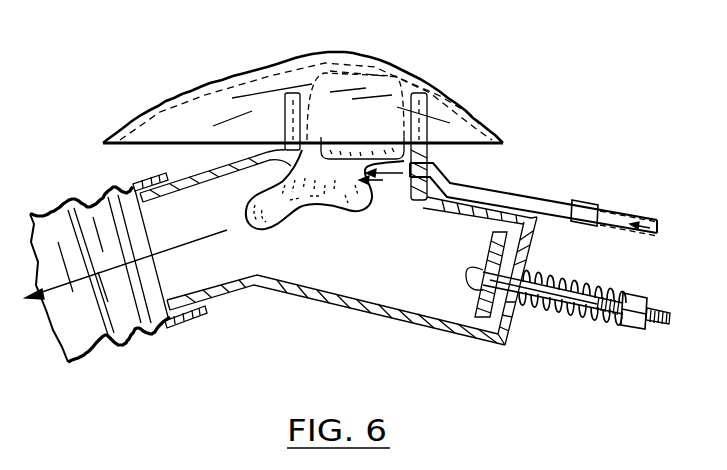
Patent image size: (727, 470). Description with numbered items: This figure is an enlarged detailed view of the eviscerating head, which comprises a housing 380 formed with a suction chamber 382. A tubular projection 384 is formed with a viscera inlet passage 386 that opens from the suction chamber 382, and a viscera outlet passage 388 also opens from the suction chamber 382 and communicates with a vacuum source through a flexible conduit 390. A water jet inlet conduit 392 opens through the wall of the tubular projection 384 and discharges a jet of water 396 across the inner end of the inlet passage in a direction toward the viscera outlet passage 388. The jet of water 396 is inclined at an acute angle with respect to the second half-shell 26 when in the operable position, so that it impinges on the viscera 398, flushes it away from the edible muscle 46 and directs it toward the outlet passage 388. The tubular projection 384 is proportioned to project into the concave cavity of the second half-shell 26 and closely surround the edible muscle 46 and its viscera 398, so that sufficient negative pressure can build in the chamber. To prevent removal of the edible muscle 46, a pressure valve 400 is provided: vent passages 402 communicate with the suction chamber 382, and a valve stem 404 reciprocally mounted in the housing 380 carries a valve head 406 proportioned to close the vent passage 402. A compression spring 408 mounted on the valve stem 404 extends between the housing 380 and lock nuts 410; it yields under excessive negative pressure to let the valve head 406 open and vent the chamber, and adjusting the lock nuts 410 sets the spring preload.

The second half-shell 26 is at (205, 87).
The edible muscle 46 is at (346, 150).
The housing 380 is at (338, 304).
The suction chamber 382 is at (347, 267).
The tubular projection 384 is at (442, 137).
The viscera inlet passage 386 is at (425, 70).
The viscera outlet passage 388 is at (197, 272).
The flexible conduit 390 is at (117, 337).
The water jet inlet conduit 392 is at (477, 187).
The jet of water 396 is at (390, 176).
The viscera 398 is at (278, 222).
The pressure valve 400 is at (561, 350).
The vent passages 402 is at (540, 280).
The valve stem 404 is at (588, 288).
The valve head 406 is at (493, 250).
The compression spring 408 is at (592, 317).
The lock nuts 410 is at (643, 291).